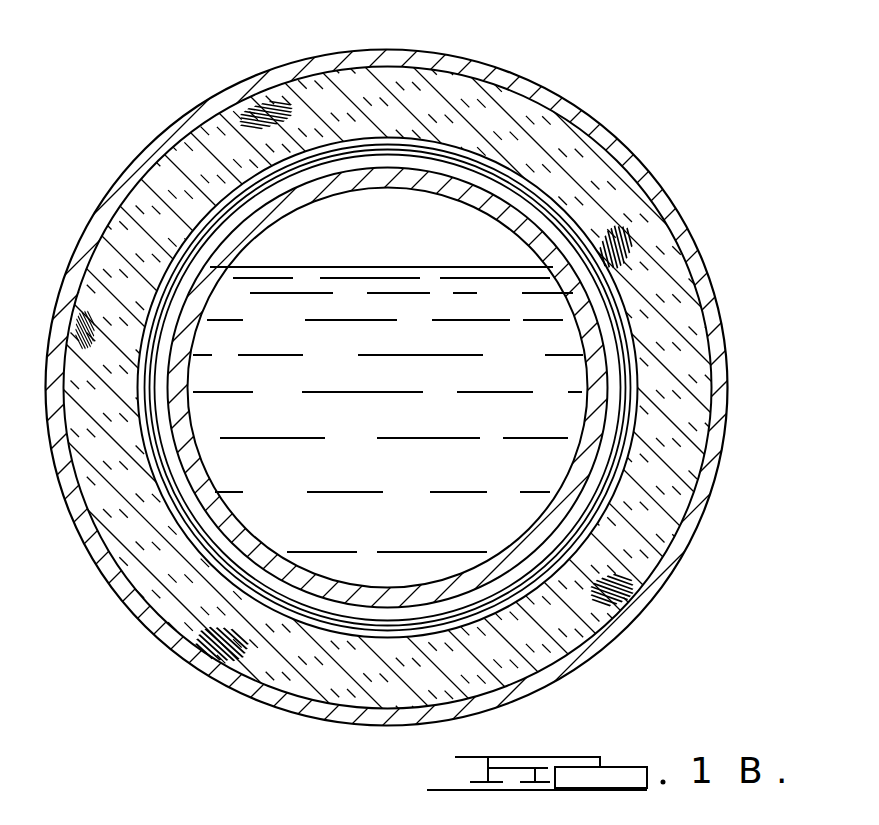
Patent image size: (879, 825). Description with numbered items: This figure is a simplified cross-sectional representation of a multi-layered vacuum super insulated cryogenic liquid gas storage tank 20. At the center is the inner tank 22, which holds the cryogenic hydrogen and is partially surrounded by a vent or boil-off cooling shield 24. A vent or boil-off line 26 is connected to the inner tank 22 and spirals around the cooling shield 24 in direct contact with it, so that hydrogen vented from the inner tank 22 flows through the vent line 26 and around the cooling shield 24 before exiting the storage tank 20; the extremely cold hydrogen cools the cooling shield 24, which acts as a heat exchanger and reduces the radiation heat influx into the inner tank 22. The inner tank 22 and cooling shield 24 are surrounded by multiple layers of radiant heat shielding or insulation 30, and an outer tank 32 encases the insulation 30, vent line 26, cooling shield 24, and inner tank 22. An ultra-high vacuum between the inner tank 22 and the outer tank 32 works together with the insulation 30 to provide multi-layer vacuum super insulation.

The storage tank 20 is at (635, 72).
The inner tank 22 is at (585, 468).
The cooling shield 24 is at (627, 375).
The vent line 26 is at (487, 620).
The insulation 30 is at (678, 335).
The outer tank 32 is at (668, 203).